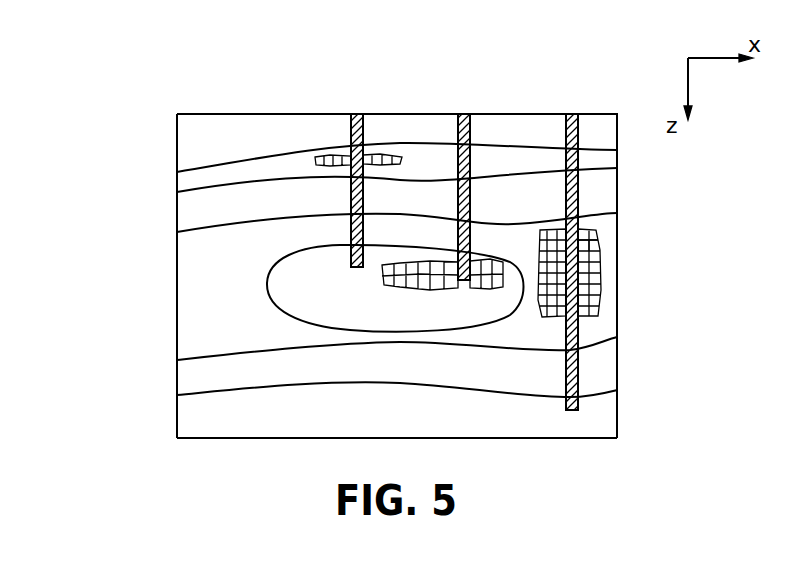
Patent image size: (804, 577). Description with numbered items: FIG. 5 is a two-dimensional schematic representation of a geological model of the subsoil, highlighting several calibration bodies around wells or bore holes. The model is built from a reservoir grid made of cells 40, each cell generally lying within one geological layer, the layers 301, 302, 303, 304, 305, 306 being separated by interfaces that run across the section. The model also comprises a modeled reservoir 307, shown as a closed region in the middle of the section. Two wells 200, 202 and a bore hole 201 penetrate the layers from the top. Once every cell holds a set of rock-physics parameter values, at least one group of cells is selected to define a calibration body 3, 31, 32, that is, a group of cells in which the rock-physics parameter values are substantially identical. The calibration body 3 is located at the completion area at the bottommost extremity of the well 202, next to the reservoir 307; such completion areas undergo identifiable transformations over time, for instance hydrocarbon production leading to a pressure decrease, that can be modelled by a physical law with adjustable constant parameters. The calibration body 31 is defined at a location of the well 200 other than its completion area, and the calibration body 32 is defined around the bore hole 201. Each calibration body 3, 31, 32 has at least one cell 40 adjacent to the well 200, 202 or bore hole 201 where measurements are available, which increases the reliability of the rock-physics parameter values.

The geological layer 301 is at (195, 147).
The geological layer 302 is at (195, 187).
The geological layer 303 is at (195, 215).
The geological layer 304 is at (195, 257).
The geological layer 305 is at (190, 375).
The geological layer 306 is at (190, 413).
The modeled reservoir 307 is at (321, 266).
The calibration body 31 is at (322, 138).
The calibration body 3 is at (495, 247).
The calibration body 32 is at (612, 288).
The cell 40 is at (598, 230).
The well 200 is at (366, 116).
The bore hole 201 is at (578, 116).
The well 202 is at (470, 116).